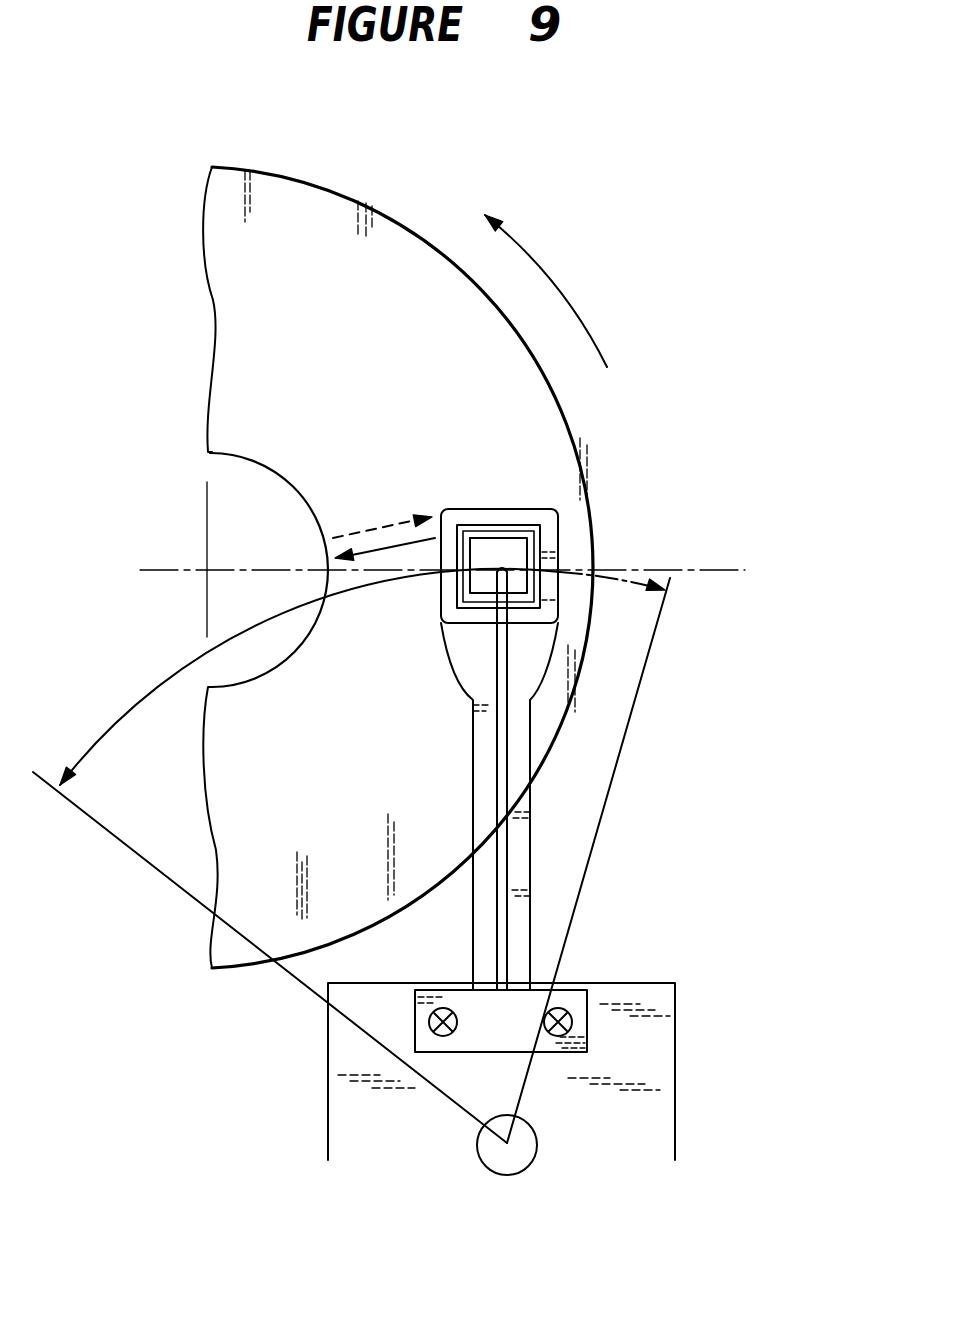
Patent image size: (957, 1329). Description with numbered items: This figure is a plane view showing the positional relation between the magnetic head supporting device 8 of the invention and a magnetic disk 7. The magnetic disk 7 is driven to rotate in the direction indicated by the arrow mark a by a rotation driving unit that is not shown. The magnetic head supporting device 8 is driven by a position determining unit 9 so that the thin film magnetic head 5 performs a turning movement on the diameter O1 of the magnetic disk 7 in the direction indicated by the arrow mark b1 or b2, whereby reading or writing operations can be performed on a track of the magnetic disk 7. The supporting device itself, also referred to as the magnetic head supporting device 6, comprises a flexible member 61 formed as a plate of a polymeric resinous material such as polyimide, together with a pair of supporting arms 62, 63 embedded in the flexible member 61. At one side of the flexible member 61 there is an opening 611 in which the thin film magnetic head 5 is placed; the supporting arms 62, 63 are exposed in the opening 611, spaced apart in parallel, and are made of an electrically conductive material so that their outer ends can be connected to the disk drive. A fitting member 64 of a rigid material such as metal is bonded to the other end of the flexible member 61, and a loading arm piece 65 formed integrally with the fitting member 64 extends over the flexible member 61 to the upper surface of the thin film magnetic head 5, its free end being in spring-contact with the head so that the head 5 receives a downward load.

The magnetic disk 7 is at (405, 215).
The arrow mark a is at (567, 298).
The diameter O1 is at (463, 569).
The arrow mark b1 is at (385, 545).
The arrow mark b2 is at (372, 527).
The magnetic head supporting device 6 is at (545, 840).
The loading arm piece 65 is at (502, 760).
The flexible member 61 is at (518, 897).
The supporting arm 62 is at (545, 543).
The thin film magnetic head 5 is at (523, 515).
The opening 611 is at (485, 537).
The supporting arm 63 is at (432, 600).
The magnetic head supporting device 8 is at (594, 892).
The fitting member 64 is at (570, 1000).
The position determining unit 9 is at (653, 1035).